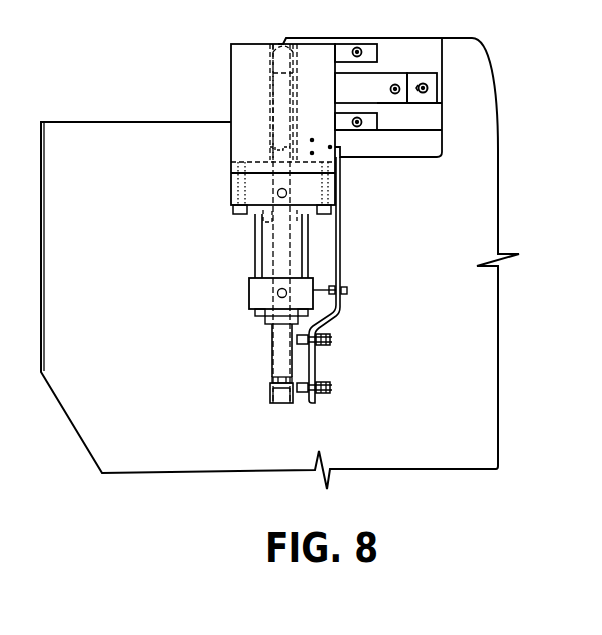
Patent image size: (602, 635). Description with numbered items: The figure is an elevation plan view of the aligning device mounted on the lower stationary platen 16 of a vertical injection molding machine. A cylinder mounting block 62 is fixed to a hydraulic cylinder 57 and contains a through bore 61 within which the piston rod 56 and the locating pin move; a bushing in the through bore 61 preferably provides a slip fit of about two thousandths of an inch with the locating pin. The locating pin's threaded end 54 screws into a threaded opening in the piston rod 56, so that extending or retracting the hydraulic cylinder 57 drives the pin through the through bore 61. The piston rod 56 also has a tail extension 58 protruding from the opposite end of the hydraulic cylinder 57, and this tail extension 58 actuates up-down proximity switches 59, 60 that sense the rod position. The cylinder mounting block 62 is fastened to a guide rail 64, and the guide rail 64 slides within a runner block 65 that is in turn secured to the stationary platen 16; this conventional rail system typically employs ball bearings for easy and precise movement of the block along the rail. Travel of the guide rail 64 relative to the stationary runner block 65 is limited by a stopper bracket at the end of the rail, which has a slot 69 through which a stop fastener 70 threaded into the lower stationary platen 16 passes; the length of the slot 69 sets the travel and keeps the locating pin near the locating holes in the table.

The lower stationary platen 16 is at (499, 200).
The threaded end 54 is at (275, 148).
The piston rod 56 is at (335, 209).
The hydraulic cylinder 57 is at (258, 250).
The tail extension 58 is at (262, 355).
The proximity switch 59 is at (333, 341).
The proximity switch 60 is at (333, 388).
The through bore 61 is at (297, 66).
The cylinder mounting block 62 is at (231, 98).
The guide rail 64 is at (395, 74).
The runner block 65 is at (377, 62).
The slot 69 is at (426, 86).
The stop fastener 70 is at (428, 88).